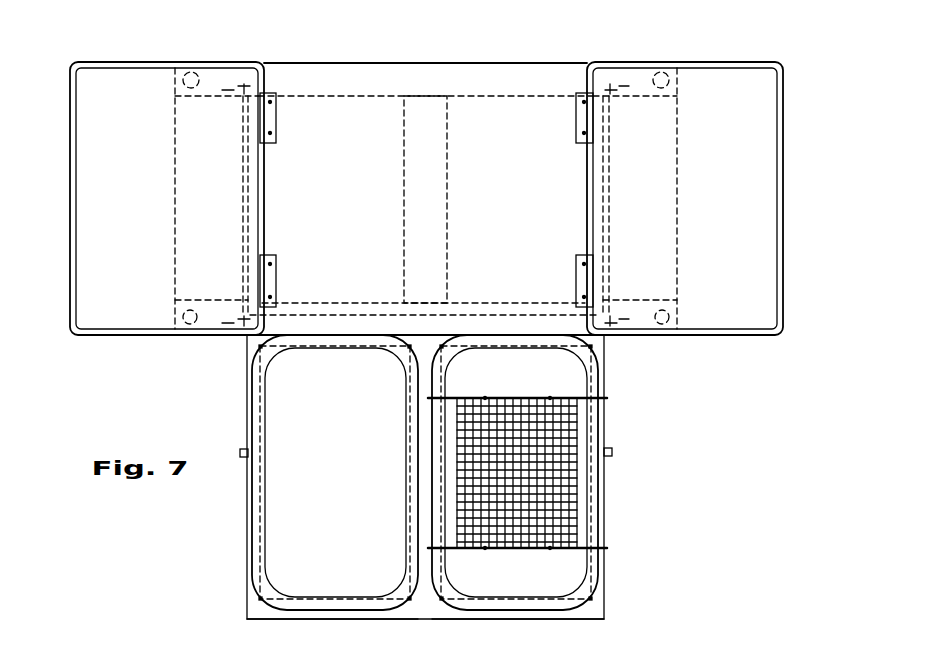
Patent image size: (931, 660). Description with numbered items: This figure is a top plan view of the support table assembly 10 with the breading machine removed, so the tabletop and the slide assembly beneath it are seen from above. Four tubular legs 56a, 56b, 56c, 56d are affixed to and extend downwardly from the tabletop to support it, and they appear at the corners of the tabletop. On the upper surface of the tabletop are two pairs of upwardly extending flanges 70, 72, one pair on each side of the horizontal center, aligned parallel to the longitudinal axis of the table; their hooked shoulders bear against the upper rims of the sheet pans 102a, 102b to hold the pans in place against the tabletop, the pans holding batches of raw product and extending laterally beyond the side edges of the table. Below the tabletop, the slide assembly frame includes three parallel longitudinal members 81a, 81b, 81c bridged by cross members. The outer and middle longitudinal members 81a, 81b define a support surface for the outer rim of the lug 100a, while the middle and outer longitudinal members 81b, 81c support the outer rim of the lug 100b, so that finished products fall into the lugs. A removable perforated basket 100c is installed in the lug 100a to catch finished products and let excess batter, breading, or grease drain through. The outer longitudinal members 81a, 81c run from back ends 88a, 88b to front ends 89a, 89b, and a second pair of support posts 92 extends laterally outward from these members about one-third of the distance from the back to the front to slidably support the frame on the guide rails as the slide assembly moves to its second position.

The support table assembly 10 is at (566, 54).
The tubular leg 56a is at (663, 325).
The tubular leg 56b is at (192, 325).
The tubular leg 56c is at (666, 73).
The tubular leg 56d is at (196, 73).
The flange 70 is at (575, 127).
The flange 72 is at (277, 122).
The outer longitudinal member 81a is at (605, 525).
The middle longitudinal member 81b is at (427, 570).
The outer longitudinal member 81c is at (247, 500).
The back end of longitudinal member 88a is at (596, 345).
The back end of longitudinal member 88b is at (257, 343).
The front end of longitudinal member 89a is at (600, 609).
The front end of longitudinal member 89b is at (262, 611).
The second support post 92 is at (243, 455).
The lug 100a is at (530, 568).
The lug 100b is at (348, 555).
The perforated basket 100c is at (538, 478).
The sheet pan 102a is at (717, 293).
The sheet pan 102b is at (113, 300).